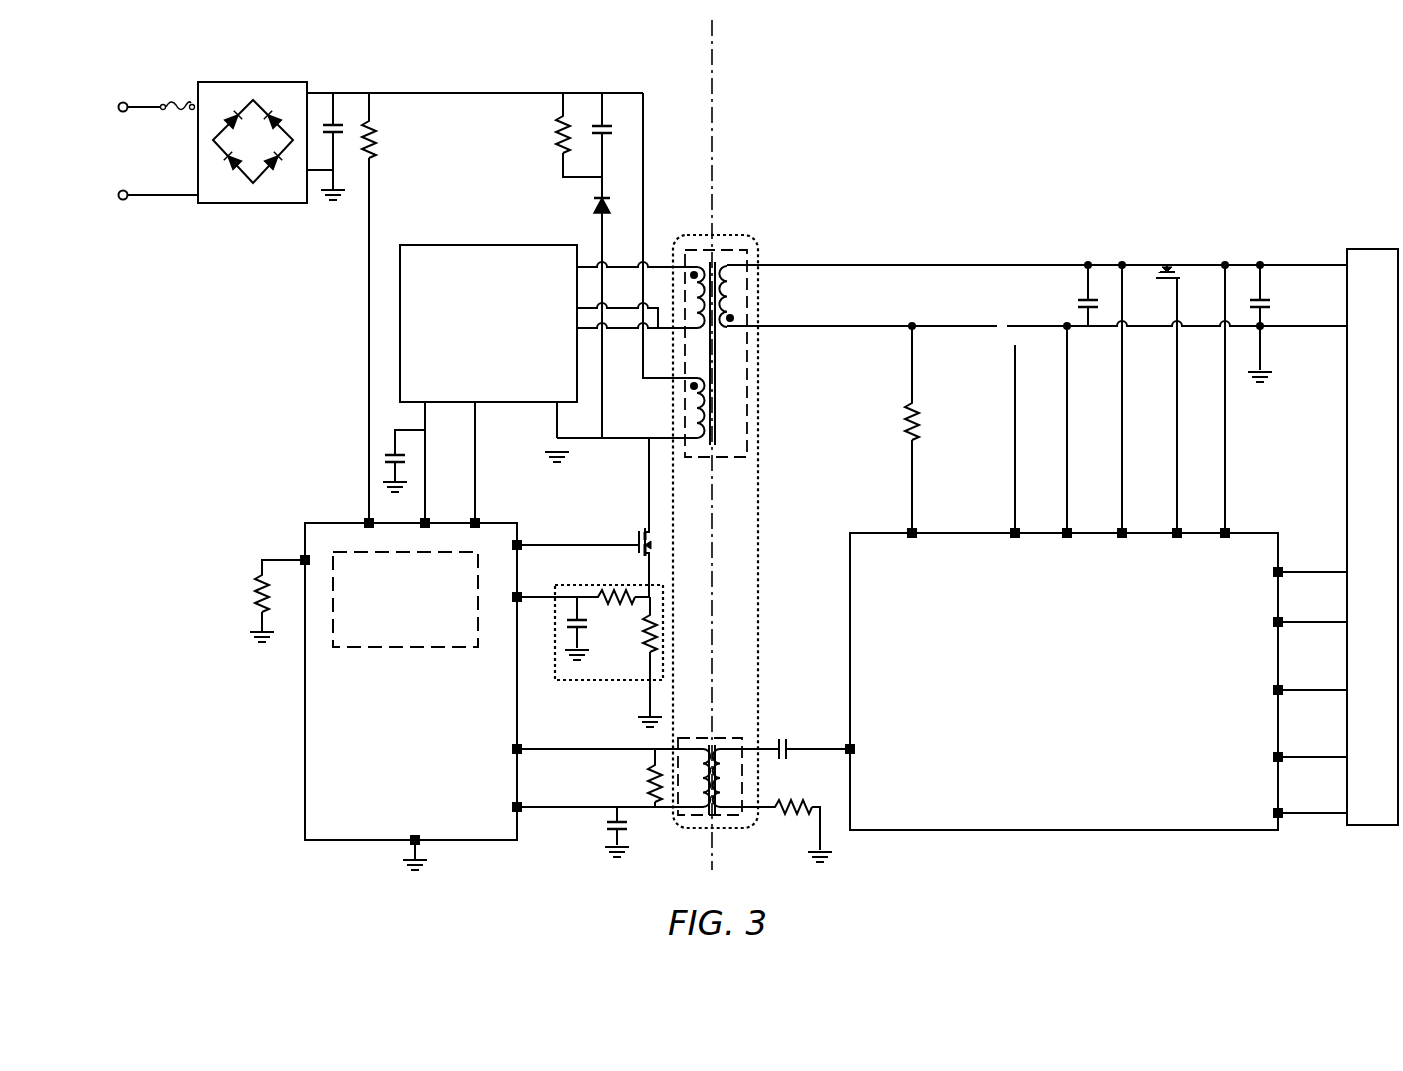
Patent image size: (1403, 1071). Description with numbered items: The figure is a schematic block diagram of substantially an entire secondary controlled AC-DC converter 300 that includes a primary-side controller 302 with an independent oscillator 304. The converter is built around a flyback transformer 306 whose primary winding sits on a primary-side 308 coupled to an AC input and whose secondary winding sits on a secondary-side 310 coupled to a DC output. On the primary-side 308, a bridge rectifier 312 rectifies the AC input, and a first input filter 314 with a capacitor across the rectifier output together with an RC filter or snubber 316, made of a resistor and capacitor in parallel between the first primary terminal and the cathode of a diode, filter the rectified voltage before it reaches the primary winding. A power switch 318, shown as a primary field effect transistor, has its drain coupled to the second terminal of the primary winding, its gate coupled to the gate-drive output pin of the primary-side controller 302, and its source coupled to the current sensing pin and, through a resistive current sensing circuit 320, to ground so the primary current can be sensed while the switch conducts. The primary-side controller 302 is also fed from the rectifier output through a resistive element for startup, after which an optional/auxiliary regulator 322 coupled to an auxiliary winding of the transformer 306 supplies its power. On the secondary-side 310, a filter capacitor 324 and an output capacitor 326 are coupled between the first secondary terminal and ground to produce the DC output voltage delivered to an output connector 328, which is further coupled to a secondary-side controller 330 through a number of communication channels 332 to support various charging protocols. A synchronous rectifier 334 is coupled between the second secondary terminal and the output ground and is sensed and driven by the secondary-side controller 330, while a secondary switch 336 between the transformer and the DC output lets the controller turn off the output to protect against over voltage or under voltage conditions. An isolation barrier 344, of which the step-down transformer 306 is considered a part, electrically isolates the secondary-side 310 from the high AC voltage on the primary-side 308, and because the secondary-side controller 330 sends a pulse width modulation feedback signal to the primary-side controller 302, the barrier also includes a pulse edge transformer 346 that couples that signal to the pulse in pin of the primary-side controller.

The secondary controlled AC-DC converter 300 is at (1341, 42).
The primary-side controller 302 is at (407, 694).
The independent oscillator 304 is at (405, 599).
The flyback transformer 306 is at (746, 249).
The primary-side 308 is at (652, 43).
The secondary-side 310 is at (793, 44).
The bridge rectifier 312 is at (253, 82).
The first input filter 314 is at (334, 80).
The RC filter or snubber 316 is at (580, 80).
The power switch 318 is at (635, 515).
The resistive current sensing circuit 320 is at (590, 656).
The optional/auxiliary regulator 322 is at (540, 308).
The filter capacitor 324 is at (1083, 297).
The output capacitor 326 is at (1263, 298).
The output connector 328 is at (1338, 537).
The secondary-side controller 330 is at (1036, 536).
The communication channels 332 is at (1300, 533).
The synchronous rectifier 334 is at (846, 649).
The secondary switch 336 is at (1159, 291).
The isolation barrier 344 is at (716, 445).
The pulse edge transformer 346 is at (738, 816).